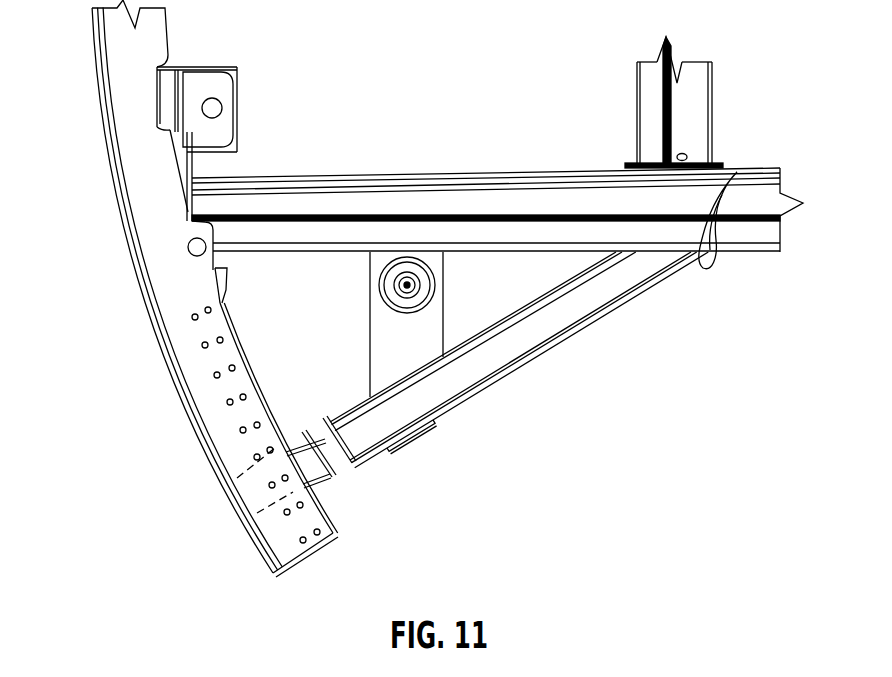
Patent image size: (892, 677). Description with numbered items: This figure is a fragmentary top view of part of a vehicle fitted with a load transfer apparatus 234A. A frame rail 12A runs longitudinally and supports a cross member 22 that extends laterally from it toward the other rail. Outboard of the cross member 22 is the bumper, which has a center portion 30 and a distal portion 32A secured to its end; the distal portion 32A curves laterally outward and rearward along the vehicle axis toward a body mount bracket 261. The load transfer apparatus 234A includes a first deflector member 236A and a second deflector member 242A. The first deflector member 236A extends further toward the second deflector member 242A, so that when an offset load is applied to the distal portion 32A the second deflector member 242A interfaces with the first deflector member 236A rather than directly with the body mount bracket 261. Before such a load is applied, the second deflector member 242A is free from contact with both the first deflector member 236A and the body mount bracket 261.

The center portion 30 is at (121, 133).
The distal portion 32A is at (211, 457).
The frame rail 12A is at (521, 171).
The cross member 22 is at (692, 124).
The body mount bracket 261 is at (388, 330).
The first deflector member 236A is at (578, 300).
The load transfer apparatus 234A is at (508, 387).
The second deflector member 242A is at (311, 476).